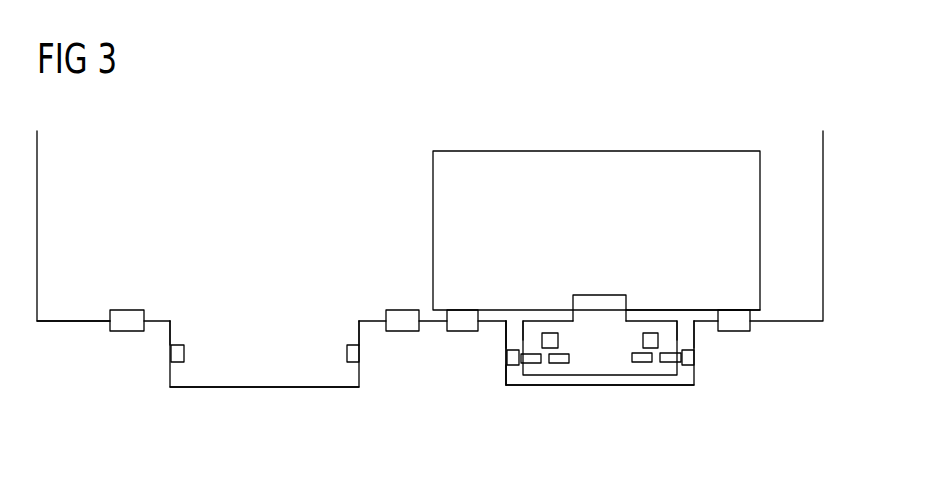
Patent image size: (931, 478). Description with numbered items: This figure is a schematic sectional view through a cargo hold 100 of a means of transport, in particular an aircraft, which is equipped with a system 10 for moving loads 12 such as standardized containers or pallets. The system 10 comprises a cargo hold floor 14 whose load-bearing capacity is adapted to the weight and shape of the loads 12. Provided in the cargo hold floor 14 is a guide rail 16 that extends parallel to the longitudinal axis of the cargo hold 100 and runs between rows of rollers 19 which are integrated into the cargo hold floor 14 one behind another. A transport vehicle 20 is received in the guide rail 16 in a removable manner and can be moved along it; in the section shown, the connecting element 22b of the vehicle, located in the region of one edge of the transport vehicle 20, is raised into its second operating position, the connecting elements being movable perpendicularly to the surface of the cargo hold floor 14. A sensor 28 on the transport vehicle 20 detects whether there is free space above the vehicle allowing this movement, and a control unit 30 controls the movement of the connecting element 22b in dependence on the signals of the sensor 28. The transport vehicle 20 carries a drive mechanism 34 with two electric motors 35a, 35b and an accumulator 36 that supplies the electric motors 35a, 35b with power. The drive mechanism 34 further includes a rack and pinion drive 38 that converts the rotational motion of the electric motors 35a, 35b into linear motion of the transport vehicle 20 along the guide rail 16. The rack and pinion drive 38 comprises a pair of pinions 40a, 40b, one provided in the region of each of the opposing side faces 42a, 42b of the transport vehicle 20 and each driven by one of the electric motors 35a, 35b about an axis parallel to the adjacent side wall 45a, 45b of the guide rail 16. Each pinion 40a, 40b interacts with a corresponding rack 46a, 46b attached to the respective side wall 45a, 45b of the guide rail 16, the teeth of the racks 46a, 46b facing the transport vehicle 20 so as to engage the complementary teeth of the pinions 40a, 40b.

The cargo hold 100 is at (623, 131).
The system for moving loads 10 is at (152, 265).
The load 12 is at (440, 188).
The cargo hold floor 14 is at (68, 320).
The guide rail 16 is at (258, 388).
The roller 19 is at (118, 333).
The transport vehicle 20 is at (612, 377).
The connecting element 22b is at (580, 294).
The sensor 28 is at (645, 310).
The control unit 30 is at (650, 332).
The drive mechanism 34 is at (698, 386).
The electric motor 35a is at (540, 366).
The electric motor 35b is at (646, 365).
The accumulator 36 is at (550, 332).
The rack and pinion drive 38 is at (503, 385).
The pinion 40a is at (511, 367).
The pinion 40b is at (688, 367).
The side face 42a is at (522, 320).
The side face 42b is at (693, 318).
The side wall 45a is at (174, 324).
The side wall 45b is at (357, 324).
The rack 46a is at (186, 353).
The rack 46b is at (346, 353).